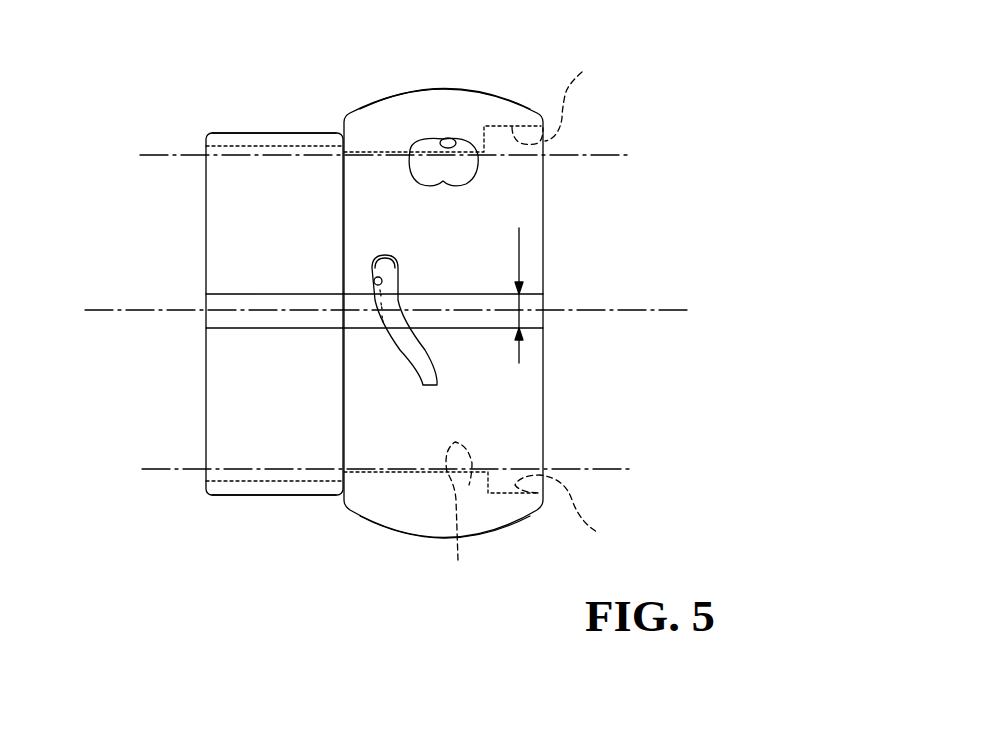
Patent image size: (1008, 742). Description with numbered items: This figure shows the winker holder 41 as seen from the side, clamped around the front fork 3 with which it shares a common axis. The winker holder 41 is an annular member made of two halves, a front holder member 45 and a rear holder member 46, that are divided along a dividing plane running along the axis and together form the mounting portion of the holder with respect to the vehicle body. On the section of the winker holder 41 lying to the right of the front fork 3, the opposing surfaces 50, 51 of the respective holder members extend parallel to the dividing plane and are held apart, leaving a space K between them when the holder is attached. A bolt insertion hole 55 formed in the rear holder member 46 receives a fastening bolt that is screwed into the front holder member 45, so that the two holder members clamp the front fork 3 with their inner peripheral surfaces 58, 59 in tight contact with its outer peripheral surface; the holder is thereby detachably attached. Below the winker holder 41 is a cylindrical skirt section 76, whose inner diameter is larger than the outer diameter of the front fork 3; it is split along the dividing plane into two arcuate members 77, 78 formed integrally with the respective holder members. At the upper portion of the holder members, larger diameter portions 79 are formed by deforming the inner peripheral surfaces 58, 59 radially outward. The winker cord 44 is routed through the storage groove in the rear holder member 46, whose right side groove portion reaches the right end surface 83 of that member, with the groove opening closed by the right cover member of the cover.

The front fork 3 is at (598, 155).
The winker holder 41 is at (387, 69).
The winker cord 44 is at (397, 348).
The front holder member 45 is at (403, 545).
The rear holder member 46 is at (438, 79).
The opposing surface 50 is at (467, 330).
The opposing surface 51 is at (426, 296).
The bolt insertion hole 55 is at (458, 143).
The inner peripheral surface 58 is at (466, 521).
The inner peripheral surface 59 is at (393, 158).
The cylindrical skirt section 76 is at (259, 124).
The arcuate member 77 is at (272, 497).
The arcuate member 78 is at (304, 132).
The larger diameter portion 79 is at (571, 308).
The right end surface 83 is at (363, 219).
The space K is at (510, 295).